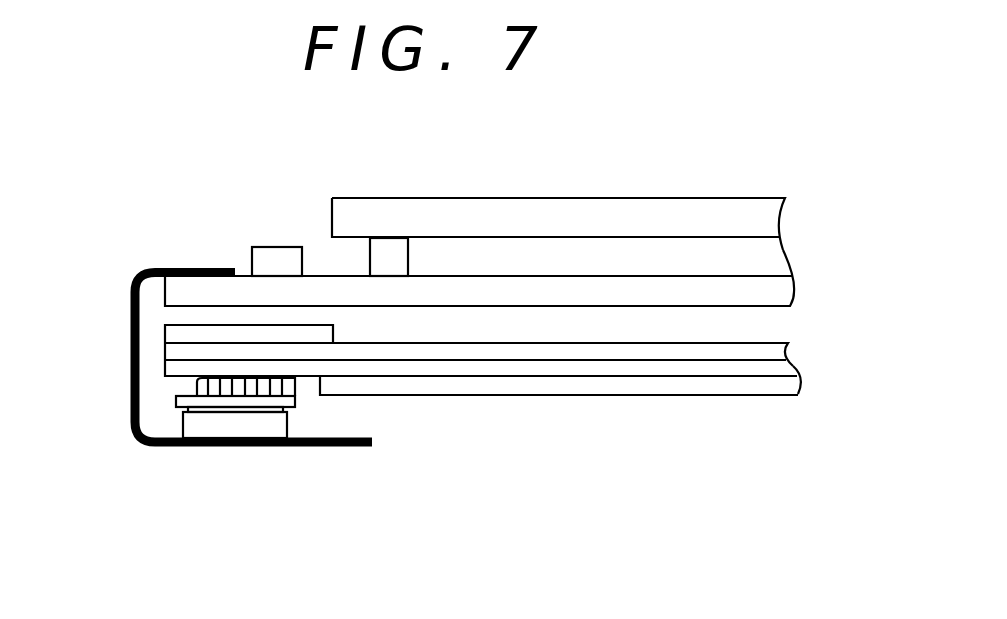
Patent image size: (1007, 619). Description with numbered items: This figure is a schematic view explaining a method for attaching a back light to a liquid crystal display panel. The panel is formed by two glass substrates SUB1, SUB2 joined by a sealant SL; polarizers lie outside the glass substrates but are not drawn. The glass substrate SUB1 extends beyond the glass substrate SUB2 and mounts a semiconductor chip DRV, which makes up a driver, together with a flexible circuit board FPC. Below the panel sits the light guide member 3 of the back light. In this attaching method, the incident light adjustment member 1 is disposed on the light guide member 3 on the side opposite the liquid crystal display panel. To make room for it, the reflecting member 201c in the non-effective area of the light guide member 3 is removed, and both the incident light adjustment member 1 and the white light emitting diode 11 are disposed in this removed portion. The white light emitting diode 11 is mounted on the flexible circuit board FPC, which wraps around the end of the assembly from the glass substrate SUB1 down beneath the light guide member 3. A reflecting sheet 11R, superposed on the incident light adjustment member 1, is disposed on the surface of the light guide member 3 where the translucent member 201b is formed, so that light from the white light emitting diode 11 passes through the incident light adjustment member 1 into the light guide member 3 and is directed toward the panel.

The glass substrate SUB2 is at (643, 217).
The glass substrate SUB1 is at (787, 290).
The semiconductor chip DRV is at (275, 247).
The sealant SL is at (397, 255).
The reflecting sheet 11R is at (183, 334).
The translucent member 201b is at (737, 350).
The light guide member 3 is at (632, 365).
The reflecting member 201c is at (512, 385).
The incident light adjustment member 1 is at (187, 398).
The white light emitting diode 11 is at (212, 425).
The flexible circuit board FPC is at (265, 450).